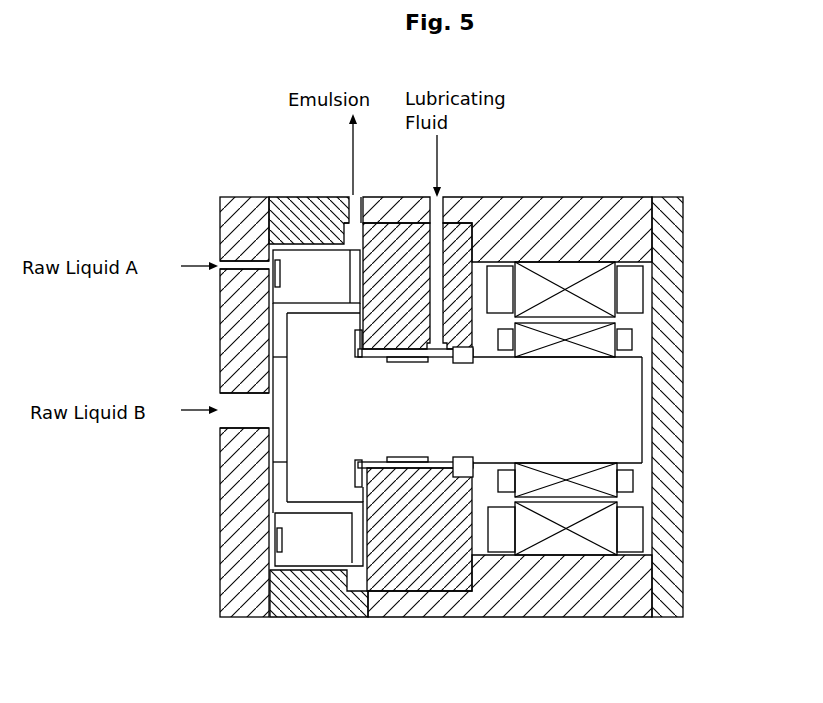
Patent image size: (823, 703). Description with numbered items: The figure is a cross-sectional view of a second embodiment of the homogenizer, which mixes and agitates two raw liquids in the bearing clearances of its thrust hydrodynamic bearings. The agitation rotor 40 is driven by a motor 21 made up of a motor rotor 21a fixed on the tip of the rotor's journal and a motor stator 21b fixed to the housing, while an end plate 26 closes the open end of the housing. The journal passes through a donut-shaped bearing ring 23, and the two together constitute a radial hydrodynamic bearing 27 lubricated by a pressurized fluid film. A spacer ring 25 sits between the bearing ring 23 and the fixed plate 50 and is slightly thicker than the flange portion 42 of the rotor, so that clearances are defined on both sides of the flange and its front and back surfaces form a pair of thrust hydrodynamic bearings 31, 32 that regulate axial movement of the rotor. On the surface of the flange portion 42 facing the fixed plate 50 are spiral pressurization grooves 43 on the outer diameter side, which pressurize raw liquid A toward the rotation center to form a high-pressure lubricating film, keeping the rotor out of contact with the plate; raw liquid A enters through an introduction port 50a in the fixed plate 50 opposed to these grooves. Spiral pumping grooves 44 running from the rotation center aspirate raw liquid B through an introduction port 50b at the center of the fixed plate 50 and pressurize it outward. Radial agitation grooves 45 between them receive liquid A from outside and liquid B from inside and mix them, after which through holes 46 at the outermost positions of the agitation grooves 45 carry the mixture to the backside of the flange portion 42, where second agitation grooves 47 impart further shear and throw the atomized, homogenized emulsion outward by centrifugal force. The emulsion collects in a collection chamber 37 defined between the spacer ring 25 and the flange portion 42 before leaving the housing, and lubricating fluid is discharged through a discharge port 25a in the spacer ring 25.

The motor 21 is at (635, 408).
The motor rotor 21a is at (623, 340).
The motor stator 21b is at (632, 293).
The bearing ring 23 is at (423, 580).
The spacer ring 25 is at (308, 617).
The discharge port 25a is at (357, 208).
The end plate 26 is at (688, 486).
The radial hydrodynamic bearing 27 is at (417, 371).
The thrust hydrodynamic bearing 31 is at (359, 365).
The thrust hydrodynamic bearing 32 is at (262, 243).
The collection chamber 37 is at (354, 236).
The agitation rotor 40 is at (326, 550).
The flange portion 42 is at (297, 555).
The pressurization grooves 43 is at (280, 275).
The pumping grooves 44 is at (283, 380).
The agitation grooves 45 is at (283, 335).
The through holes 46 is at (306, 307).
The second agitation grooves 47 is at (350, 268).
The fixed plate 50 is at (397, 407).
The introduction port 50a is at (236, 256).
The introduction port 50b is at (218, 388).